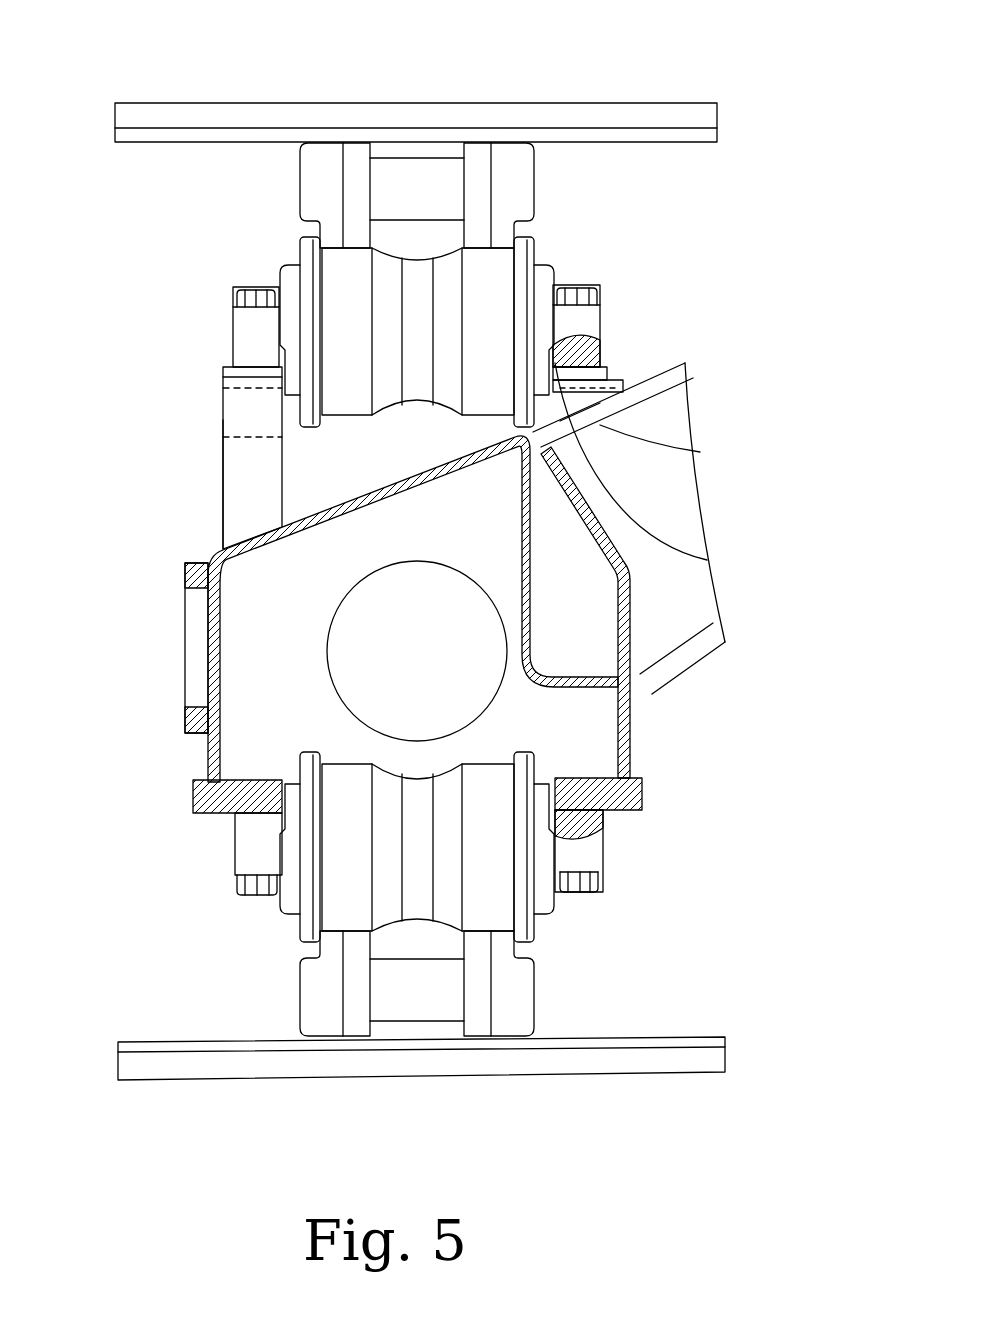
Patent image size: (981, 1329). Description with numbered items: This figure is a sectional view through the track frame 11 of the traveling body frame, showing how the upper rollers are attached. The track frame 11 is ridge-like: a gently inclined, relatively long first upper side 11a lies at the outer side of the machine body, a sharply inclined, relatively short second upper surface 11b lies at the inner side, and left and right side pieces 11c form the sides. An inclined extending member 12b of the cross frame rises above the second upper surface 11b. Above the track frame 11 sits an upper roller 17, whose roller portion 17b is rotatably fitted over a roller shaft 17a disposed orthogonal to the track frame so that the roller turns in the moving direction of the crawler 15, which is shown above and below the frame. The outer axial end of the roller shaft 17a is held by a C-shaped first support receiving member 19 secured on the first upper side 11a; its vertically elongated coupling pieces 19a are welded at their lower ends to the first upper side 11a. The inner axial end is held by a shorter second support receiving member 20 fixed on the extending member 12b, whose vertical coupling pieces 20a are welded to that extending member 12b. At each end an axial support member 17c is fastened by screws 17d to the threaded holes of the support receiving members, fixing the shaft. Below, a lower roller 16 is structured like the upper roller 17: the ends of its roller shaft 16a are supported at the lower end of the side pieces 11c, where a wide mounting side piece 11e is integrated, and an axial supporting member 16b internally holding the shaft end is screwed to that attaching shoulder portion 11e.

The crawler 15 is at (413, 110).
The upper roller 17 is at (500, 285).
The roller shaft 17a is at (717, 558).
The roller portion 17b is at (500, 290).
The axial support member 17c is at (245, 333).
The screw 17d is at (258, 288).
The first support receiving member 19 is at (222, 453).
The coupling piece 19a is at (243, 500).
The second support receiving member 20 is at (662, 500).
The coupling piece 20a is at (575, 407).
The extending member 12b is at (600, 425).
The track frame 11 is at (416, 665).
The first upper side 11a is at (276, 545).
The second upper surface 11b is at (590, 527).
The side piece 11c is at (185, 730).
The mounting side piece 11e is at (212, 800).
The lower roller 16 is at (350, 889).
The roller shaft 16a is at (580, 827).
The axial supporting member 16b is at (245, 857).